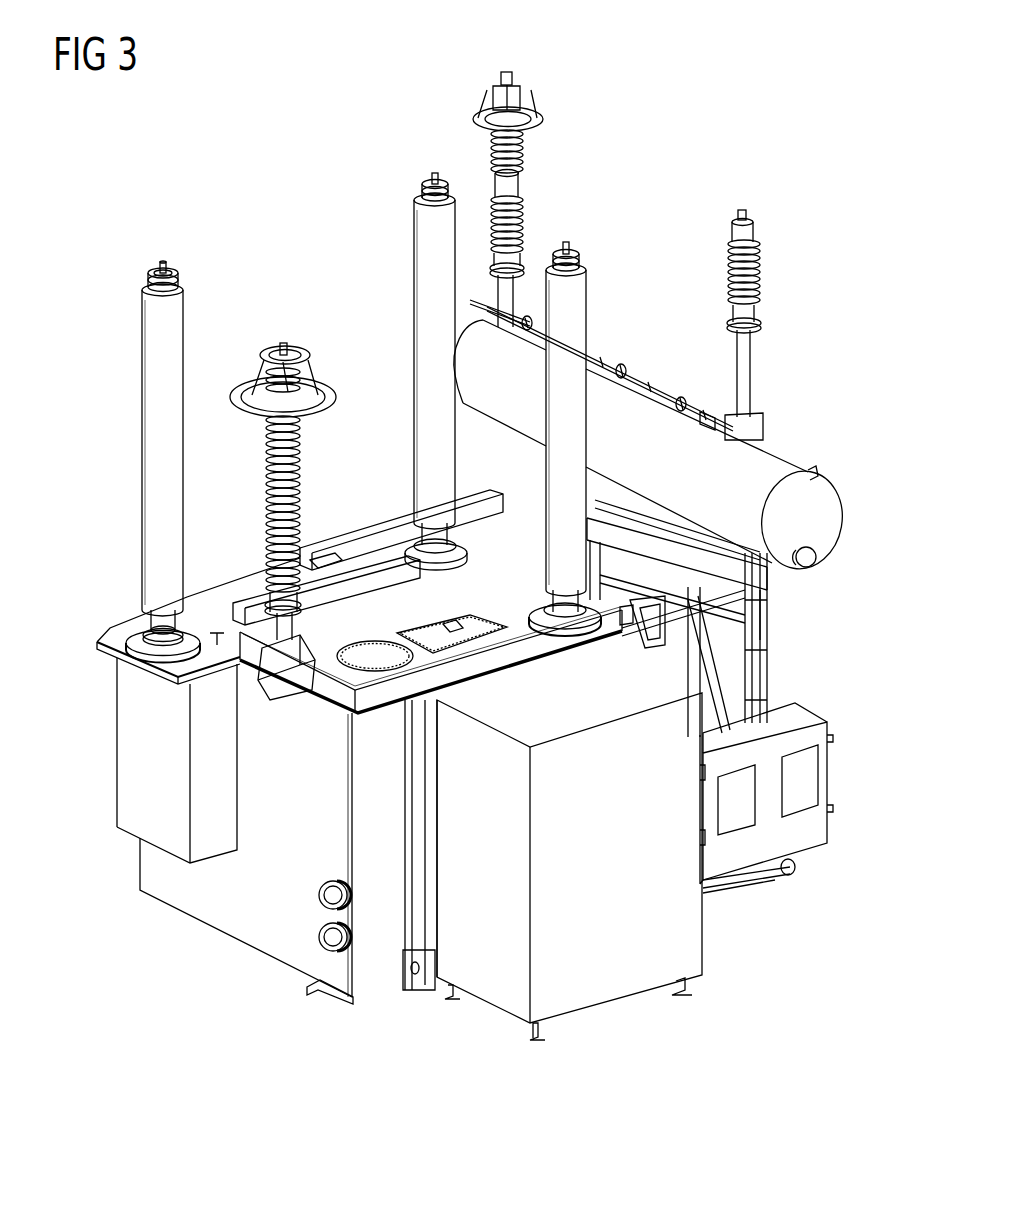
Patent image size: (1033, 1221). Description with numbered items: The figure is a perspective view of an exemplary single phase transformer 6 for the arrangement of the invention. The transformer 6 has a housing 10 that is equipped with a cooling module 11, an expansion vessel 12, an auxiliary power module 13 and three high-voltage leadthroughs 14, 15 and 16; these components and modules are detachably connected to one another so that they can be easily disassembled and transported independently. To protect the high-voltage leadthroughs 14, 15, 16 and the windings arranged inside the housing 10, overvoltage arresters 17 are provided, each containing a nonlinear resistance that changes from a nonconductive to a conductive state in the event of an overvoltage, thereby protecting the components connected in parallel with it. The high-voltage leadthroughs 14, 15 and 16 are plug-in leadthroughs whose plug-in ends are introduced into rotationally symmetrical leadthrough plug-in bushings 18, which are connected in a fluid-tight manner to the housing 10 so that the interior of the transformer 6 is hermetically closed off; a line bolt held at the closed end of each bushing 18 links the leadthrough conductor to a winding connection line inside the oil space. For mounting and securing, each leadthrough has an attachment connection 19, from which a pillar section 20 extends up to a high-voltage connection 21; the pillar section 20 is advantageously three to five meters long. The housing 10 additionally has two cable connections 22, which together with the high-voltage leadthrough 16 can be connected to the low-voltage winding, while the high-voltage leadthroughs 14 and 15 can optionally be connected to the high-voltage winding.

The single phase transformer 6 is at (708, 126).
The housing 10 is at (196, 941).
The cooling module 11 is at (797, 643).
The expansion vessel 12 is at (773, 458).
The auxiliary power module 13 is at (483, 1023).
The high-voltage leadthrough 14 is at (118, 347).
The high-voltage leadthrough 15 is at (404, 299).
The high-voltage leadthrough 16 is at (602, 308).
The overvoltage arrester 17 is at (552, 148).
The leadthrough plug-in bushing 18 is at (140, 634).
The attachment connection 19 is at (152, 628).
The pillar section 20 is at (143, 406).
The high-voltage connection 21 is at (157, 240).
The cable connection 22 is at (333, 897).